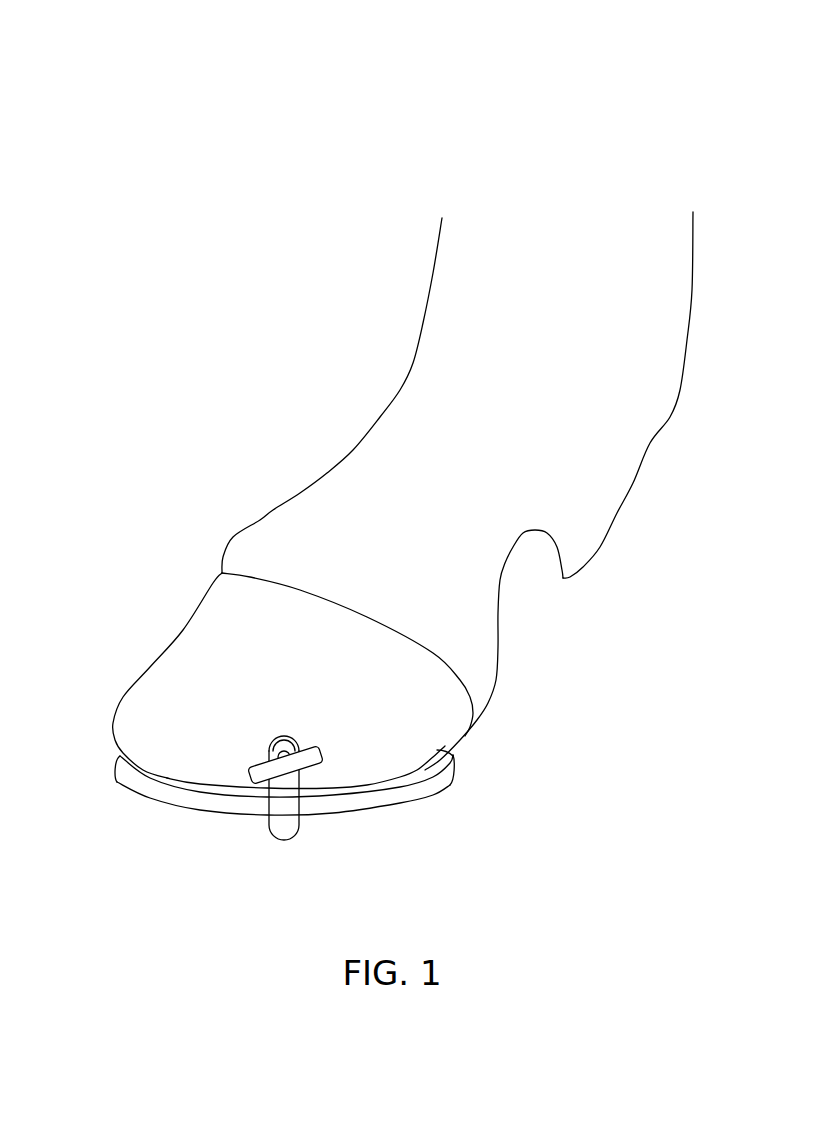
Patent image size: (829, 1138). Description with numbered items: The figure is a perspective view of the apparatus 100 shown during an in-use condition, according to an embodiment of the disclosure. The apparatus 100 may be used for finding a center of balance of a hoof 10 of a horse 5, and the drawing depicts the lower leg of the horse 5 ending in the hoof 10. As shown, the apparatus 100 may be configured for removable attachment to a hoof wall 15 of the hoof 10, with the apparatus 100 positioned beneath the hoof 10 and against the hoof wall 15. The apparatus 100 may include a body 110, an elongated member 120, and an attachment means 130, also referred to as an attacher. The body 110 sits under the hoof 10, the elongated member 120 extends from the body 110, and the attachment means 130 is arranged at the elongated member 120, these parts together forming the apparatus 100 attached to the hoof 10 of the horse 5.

The apparatus 100 is at (438, 452).
The horse 5 is at (403, 443).
The hoof 10 is at (200, 658).
The hoof wall 15 is at (163, 775).
The body 110 is at (433, 798).
The elongated member 120 is at (282, 829).
The attachment means 130 is at (313, 772).